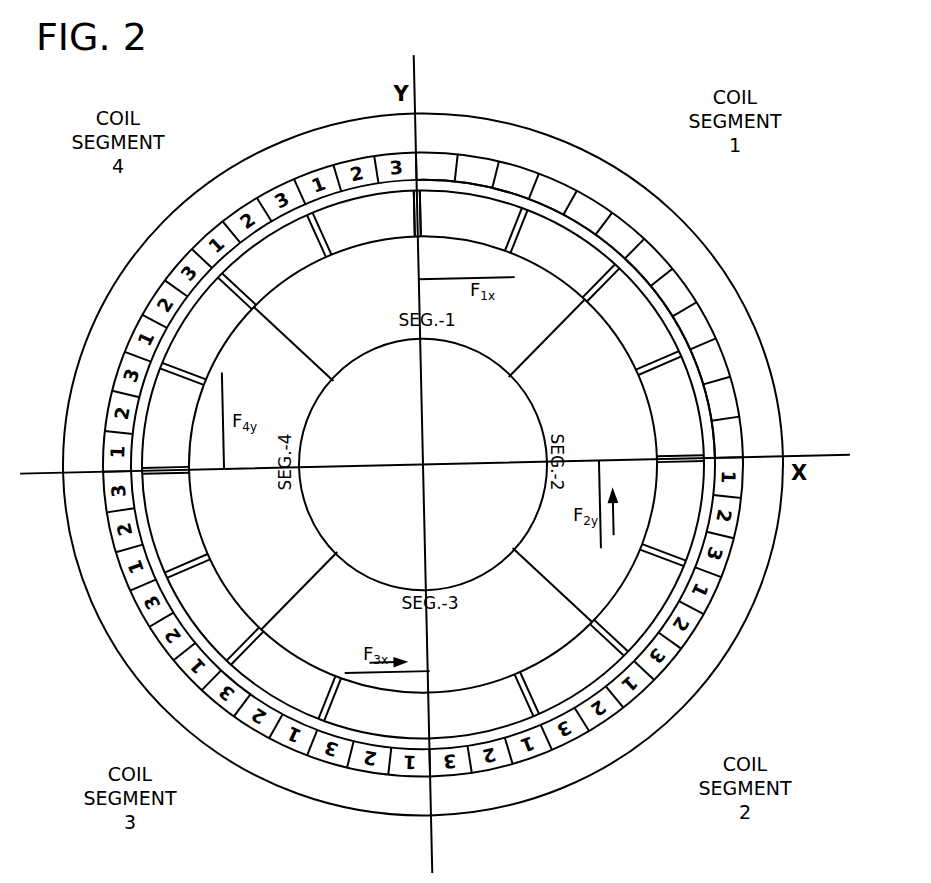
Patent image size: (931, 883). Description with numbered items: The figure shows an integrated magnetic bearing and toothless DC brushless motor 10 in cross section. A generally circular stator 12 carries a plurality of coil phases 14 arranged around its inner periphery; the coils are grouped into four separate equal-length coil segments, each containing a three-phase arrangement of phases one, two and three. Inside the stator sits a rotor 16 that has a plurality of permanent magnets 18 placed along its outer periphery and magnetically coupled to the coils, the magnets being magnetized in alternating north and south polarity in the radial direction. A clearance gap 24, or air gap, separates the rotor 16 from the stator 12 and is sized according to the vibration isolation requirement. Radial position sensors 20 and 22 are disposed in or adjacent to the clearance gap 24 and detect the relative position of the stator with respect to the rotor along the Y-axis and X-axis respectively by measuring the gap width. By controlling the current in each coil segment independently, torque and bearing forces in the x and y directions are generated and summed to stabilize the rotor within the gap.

The integrated magnetic bearing and toothless DC brushless motor 10 is at (249, 123).
The stator 12 is at (558, 168).
The coil phases 14 is at (416, 146).
The rotor 16 is at (590, 330).
The permanent magnets 18 is at (680, 387).
The radial position sensor 20 is at (405, 188).
The radial position sensor 22 is at (712, 464).
The clearance gap 24 is at (675, 330).